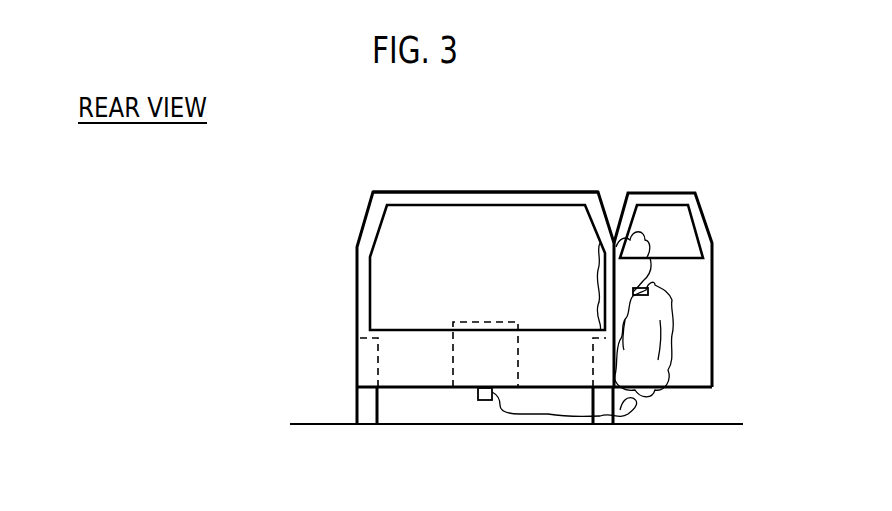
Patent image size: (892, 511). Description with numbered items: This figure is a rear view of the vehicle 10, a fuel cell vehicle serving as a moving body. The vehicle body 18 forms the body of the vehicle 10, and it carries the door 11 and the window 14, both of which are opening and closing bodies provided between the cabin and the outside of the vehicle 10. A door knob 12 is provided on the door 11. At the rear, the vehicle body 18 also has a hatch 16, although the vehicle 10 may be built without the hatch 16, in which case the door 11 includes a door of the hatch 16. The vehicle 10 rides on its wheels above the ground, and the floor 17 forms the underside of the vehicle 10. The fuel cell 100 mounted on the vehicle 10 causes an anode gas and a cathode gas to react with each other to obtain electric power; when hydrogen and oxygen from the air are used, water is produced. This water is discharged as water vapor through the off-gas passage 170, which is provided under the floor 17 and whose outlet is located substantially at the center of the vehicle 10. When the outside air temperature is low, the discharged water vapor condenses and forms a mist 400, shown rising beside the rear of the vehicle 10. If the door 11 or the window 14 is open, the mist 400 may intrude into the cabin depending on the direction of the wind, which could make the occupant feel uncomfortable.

The vehicle 10 is at (290, 150).
The door 11 is at (676, 193).
The door knob 12 is at (647, 286).
The window 14 is at (699, 222).
The hatch 16 is at (533, 204).
The floor 17 is at (410, 388).
The vehicle body 18 is at (433, 191).
The fuel cell 100 is at (467, 322).
The off-gas passage 170 is at (483, 400).
The mist 400 is at (640, 410).